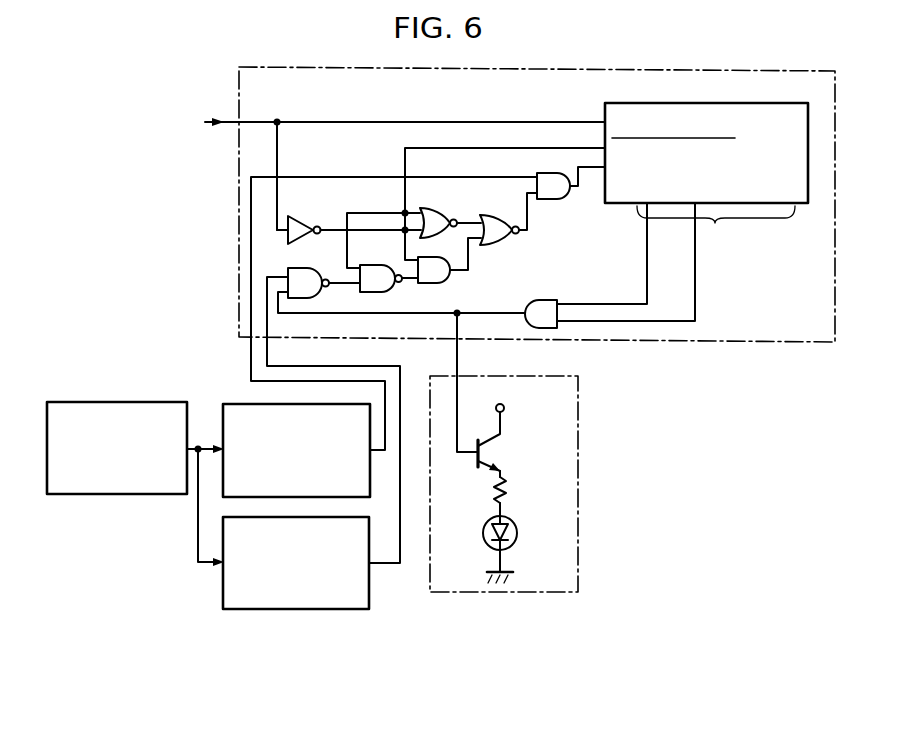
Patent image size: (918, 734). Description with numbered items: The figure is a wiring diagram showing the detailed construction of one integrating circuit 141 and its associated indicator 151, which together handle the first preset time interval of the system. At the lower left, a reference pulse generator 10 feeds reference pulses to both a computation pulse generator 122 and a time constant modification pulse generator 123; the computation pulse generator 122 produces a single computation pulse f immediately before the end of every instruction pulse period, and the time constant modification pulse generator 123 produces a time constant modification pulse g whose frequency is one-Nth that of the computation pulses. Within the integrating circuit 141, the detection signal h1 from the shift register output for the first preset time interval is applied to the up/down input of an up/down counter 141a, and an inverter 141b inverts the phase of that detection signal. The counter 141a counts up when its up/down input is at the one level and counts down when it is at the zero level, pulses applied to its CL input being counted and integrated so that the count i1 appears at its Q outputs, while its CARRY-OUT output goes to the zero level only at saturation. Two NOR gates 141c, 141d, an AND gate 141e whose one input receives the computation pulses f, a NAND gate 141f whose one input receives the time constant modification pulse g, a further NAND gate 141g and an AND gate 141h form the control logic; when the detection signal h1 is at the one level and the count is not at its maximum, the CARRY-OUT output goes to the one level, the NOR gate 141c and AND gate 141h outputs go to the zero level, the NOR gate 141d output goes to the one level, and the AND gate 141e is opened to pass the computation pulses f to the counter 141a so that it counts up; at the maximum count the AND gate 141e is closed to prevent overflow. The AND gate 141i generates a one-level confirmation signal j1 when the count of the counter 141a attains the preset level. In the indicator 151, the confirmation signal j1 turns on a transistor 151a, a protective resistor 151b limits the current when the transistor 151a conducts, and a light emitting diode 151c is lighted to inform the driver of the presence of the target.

The reference pulse generator 10 is at (84, 402).
The computation pulse generator 122 is at (238, 405).
The time constant modification pulse generator 123 is at (222, 597).
The integrating circuit 141 is at (676, 68).
The up/down counter 141a is at (668, 103).
The inverter 141b is at (313, 214).
The NOR gate 141c is at (447, 212).
The NOR gate 141d is at (493, 243).
The AND gate 141e is at (547, 201).
The NAND gate 141f is at (292, 254).
The NAND gate 141g is at (395, 291).
The AND gate 141h is at (480, 269).
The AND gate 141i is at (548, 300).
The indicator 151 is at (578, 414).
The transistor 151a is at (488, 470).
The protective resistor 151b is at (506, 485).
The light emitting diode 151c is at (517, 538).
The detection signal h1 is at (232, 120).
The computation pulse f is at (250, 359).
The time constant modification pulse g is at (267, 348).
The count of the counter i1 is at (716, 230).
The confirmation signal j1 is at (457, 350).